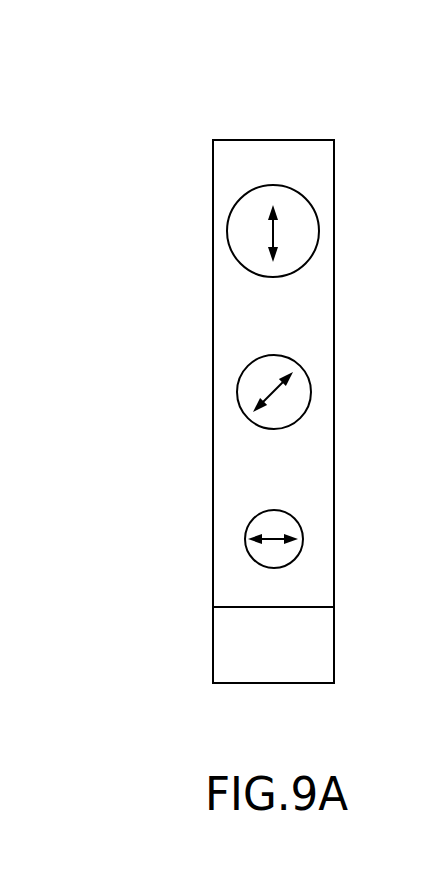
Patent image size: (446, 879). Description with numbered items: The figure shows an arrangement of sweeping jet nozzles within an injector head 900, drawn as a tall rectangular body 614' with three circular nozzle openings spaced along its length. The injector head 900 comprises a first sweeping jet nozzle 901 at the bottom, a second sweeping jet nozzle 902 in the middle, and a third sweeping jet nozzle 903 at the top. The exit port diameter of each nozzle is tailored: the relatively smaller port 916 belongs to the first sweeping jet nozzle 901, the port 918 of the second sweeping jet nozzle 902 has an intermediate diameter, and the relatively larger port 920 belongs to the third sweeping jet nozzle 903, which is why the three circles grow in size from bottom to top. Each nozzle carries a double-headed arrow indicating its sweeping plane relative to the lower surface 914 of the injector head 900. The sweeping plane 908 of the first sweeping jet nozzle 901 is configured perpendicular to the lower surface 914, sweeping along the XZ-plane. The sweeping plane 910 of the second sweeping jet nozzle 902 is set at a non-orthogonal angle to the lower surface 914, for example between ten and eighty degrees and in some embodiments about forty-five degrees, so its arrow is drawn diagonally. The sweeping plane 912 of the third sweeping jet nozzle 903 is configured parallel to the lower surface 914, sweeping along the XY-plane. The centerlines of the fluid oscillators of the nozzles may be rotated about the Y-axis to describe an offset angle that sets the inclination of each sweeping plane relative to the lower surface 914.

The injector head 900 is at (326, 114).
The substrate strip 614' is at (312, 411).
The first sweeping jet nozzle 901 is at (214, 555).
The second sweeping jet nozzle 902 is at (214, 403).
The third sweeping jet nozzle 903 is at (214, 232).
The sweeping plane 908 is at (290, 537).
The sweeping plane 910 is at (285, 381).
The sweeping plane 912 is at (277, 240).
The lower surface 914 is at (334, 273).
The port 916 is at (303, 552).
The port 918 is at (302, 412).
The port 920 is at (300, 267).